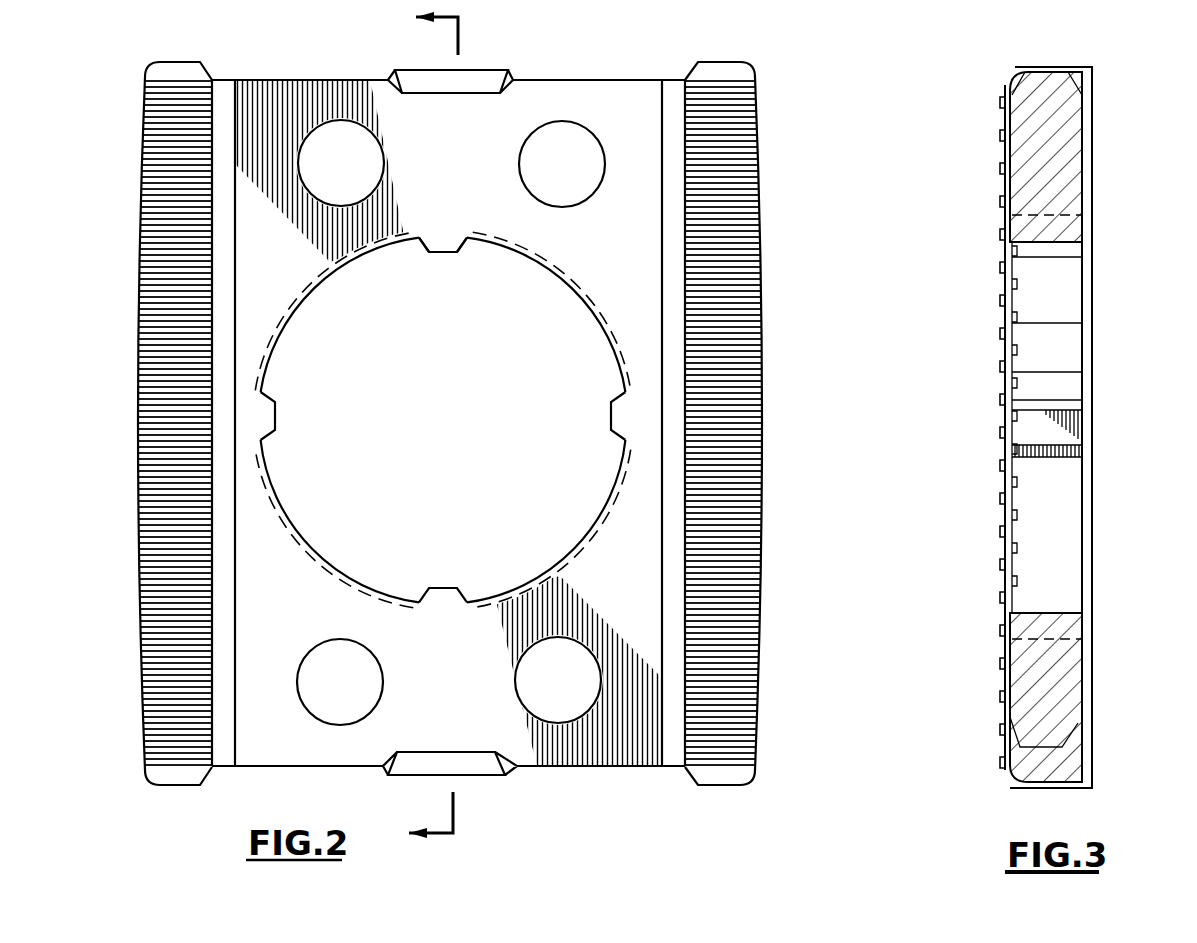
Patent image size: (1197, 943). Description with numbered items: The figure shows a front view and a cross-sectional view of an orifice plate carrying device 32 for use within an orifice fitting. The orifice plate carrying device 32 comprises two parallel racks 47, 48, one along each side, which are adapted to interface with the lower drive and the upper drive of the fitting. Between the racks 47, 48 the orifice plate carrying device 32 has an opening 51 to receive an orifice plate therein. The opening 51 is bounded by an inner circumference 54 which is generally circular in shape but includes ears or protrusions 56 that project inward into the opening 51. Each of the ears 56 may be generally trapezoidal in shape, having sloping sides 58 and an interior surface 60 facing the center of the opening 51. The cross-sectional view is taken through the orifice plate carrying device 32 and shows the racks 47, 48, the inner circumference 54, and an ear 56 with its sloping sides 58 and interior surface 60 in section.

In FIG. 2, the orifice plate carrying device 32 is at (128, 659).
In FIG. 3, the orifice plate carrying device 32 is at (965, 664).
In FIG. 2, the rack 47 is at (713, 120).
In FIG. 2, the rack 48 is at (176, 141).
In FIG. 3, the rack 48 is at (1003, 167).
In FIG. 2, the opening 51 is at (556, 300).
In FIG. 2, the inner circumference 54 is at (280, 334).
In FIG. 3, the inner circumference 54 is at (1037, 350).
In FIG. 2, the ears or protrusions 56 is at (443, 256).
In FIG. 3, the ears or protrusions 56 is at (1036, 431).
In FIG. 2, the sloping sides 58 is at (422, 244).
In FIG. 3, the sloping sides 58 is at (1056, 402).
In FIG. 2, the interior surface 60 is at (462, 245).
In FIG. 3, the interior surface 60 is at (1053, 433).